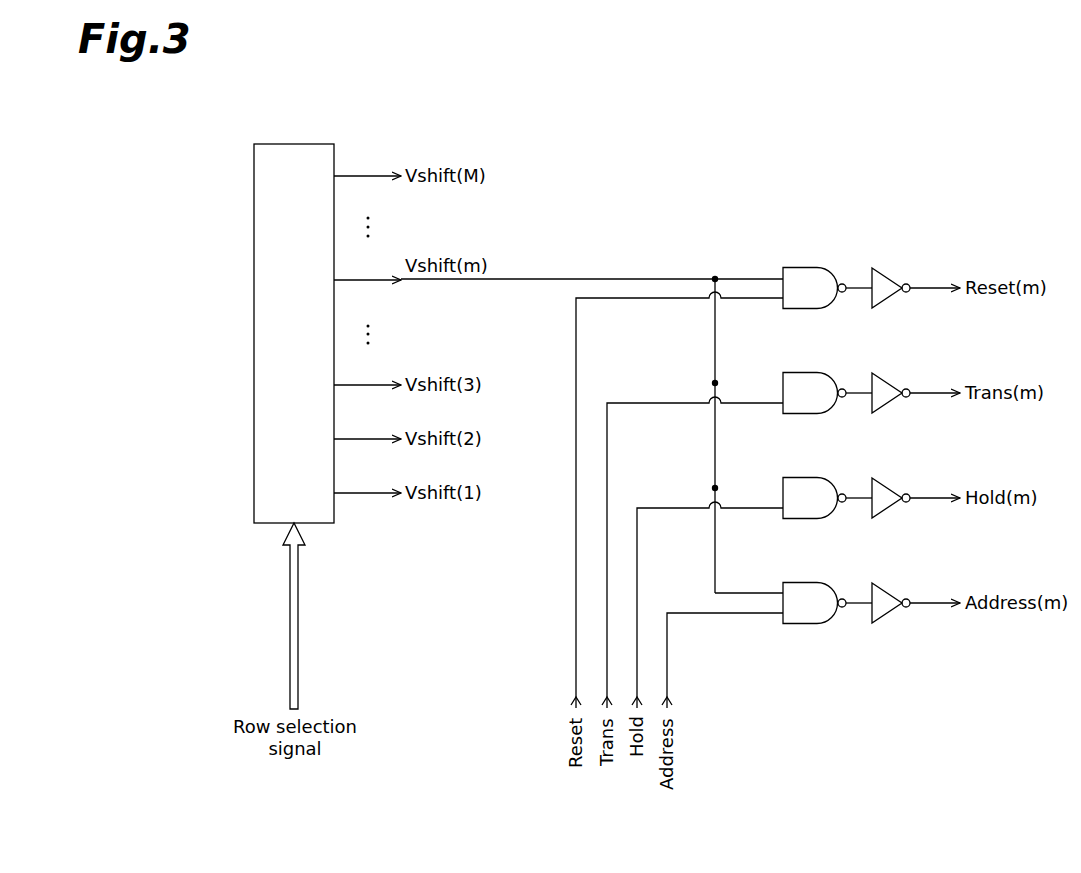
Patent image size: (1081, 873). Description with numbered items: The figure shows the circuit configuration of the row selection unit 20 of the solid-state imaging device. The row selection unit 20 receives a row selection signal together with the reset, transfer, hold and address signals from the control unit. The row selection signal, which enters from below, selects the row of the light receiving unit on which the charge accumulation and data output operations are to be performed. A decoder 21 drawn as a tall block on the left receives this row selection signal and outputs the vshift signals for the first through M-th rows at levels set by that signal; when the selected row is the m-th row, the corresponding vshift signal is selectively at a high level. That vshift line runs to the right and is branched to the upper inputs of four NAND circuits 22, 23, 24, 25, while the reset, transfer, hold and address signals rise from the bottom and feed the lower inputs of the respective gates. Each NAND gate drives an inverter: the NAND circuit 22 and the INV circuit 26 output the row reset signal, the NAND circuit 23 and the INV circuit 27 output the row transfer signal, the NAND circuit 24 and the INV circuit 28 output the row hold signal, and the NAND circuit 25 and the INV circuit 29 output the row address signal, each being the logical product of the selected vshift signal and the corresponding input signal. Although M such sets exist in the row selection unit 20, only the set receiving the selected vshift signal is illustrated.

The row selection unit 20 is at (848, 92).
The decoder 21 is at (304, 144).
The NAND circuit 22 is at (808, 268).
The NAND circuit 23 is at (808, 372).
The NAND circuit 24 is at (808, 478).
The NAND circuit 25 is at (808, 582).
The INV circuit 26 is at (885, 275).
The INV circuit 27 is at (885, 380).
The INV circuit 28 is at (885, 485).
The INV circuit 29 is at (885, 590).